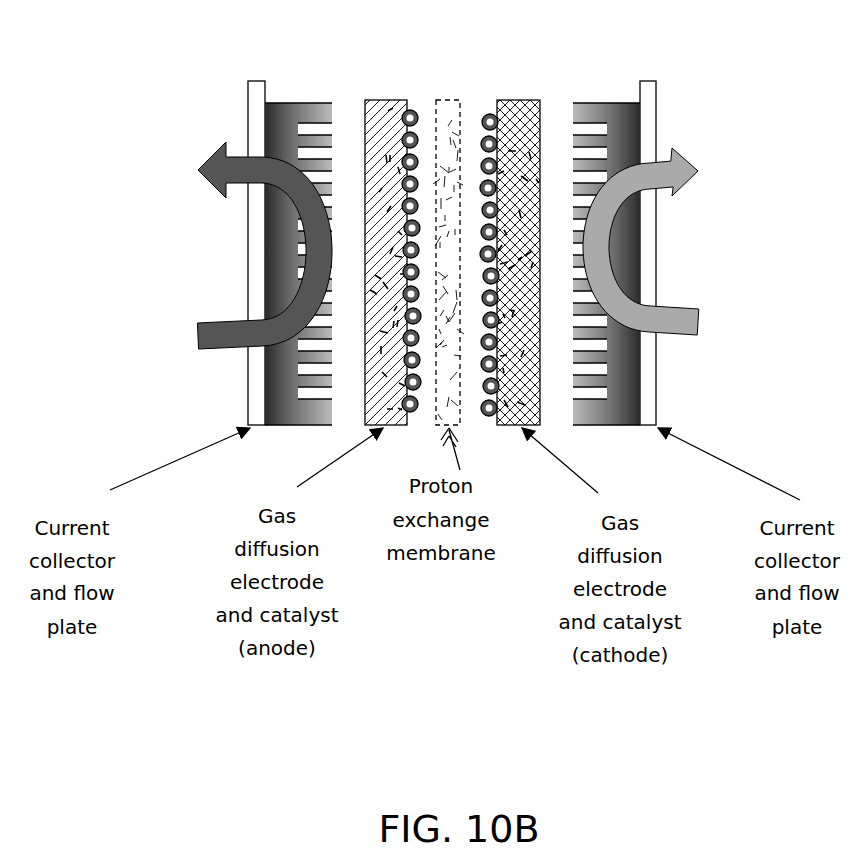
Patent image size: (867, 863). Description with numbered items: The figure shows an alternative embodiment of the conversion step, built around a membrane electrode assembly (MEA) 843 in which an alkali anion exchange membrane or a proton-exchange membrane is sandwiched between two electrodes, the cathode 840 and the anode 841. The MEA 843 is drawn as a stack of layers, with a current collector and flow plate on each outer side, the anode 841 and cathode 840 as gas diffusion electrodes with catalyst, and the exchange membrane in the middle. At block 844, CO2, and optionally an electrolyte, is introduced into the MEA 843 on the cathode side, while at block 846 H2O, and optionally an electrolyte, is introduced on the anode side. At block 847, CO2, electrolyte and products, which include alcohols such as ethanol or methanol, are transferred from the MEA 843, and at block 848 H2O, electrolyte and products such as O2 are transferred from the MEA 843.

The cathode 840 is at (518, 100).
The anode 841 is at (368, 100).
The membrane electrode assembly (MEA) 843 is at (450, 100).
The block for introducing CO2 844 is at (750, 303).
The block for introducing H2O 846 is at (152, 335).
The block for transferring CO2, electrolyte and products 847 is at (750, 115).
The block for transferring H2O, electrolyte and products 848 is at (168, 125).